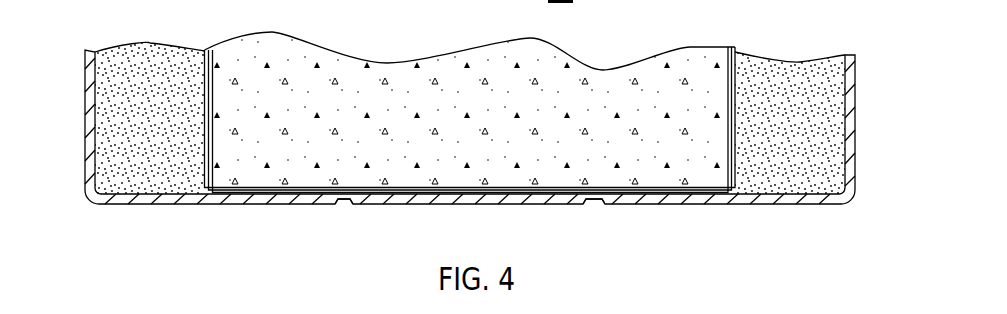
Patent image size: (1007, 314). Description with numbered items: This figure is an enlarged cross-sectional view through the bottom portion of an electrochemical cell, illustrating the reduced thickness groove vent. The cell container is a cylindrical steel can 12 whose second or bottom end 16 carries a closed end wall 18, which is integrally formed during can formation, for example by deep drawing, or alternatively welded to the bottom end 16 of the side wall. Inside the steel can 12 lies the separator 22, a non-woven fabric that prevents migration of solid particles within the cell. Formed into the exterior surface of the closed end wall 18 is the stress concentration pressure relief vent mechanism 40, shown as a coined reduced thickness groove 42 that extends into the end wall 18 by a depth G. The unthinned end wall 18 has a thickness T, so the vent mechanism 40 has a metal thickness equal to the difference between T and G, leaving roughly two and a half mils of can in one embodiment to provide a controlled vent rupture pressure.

The steel can 12 is at (85, 70).
The bottom end 16 is at (97, 203).
The closed end wall 18 is at (685, 206).
The separator 22 is at (735, 73).
The pressure relief vent mechanism 40 is at (348, 207).
The reduced thickness groove 42 is at (592, 204).